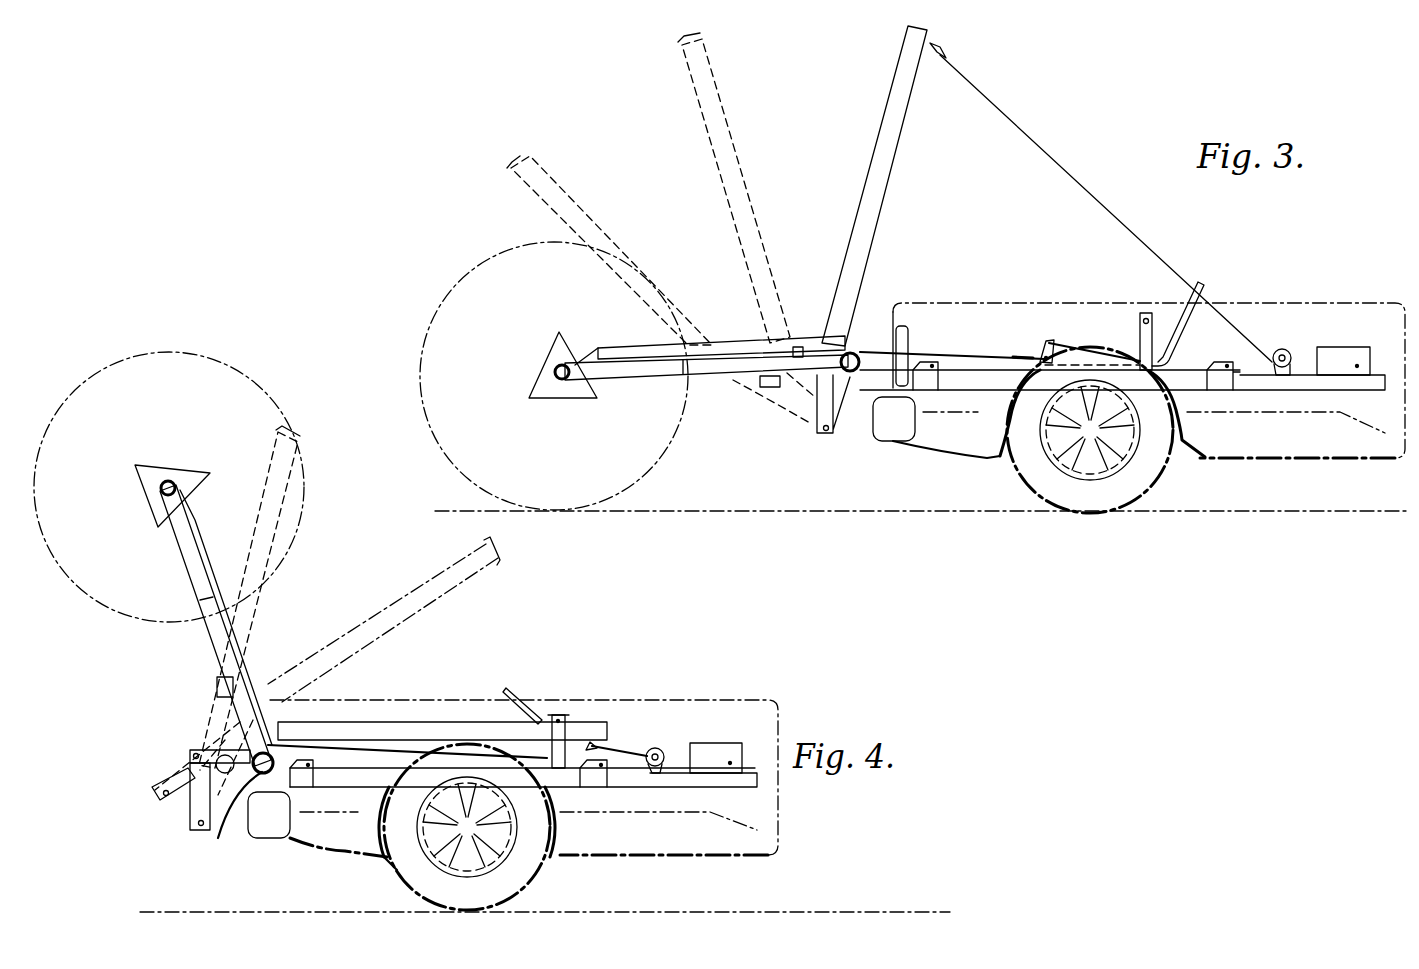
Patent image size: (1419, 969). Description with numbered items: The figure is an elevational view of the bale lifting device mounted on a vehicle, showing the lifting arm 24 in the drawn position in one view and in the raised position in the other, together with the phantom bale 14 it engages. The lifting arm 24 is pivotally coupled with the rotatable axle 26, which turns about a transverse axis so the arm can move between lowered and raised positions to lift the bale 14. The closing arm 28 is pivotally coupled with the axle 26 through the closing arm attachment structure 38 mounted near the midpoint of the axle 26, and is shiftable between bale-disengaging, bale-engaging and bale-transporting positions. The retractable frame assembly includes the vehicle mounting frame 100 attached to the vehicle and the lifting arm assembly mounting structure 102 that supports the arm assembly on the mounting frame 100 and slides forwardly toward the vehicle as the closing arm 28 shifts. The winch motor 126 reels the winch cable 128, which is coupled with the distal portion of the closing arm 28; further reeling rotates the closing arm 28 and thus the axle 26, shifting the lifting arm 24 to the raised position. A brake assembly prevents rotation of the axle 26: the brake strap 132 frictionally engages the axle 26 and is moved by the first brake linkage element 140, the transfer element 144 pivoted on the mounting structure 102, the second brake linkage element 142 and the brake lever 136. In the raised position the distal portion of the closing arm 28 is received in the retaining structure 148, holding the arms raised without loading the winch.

In FIG. 3, the bale 14 is at (487, 334).
In FIG. 4, the bale 14 is at (210, 410).
In FIG. 3, the lifting arm 24 is at (713, 375).
In FIG. 4, the lifting arm 24 is at (217, 623).
In FIG. 3, the rotatable axle 26 is at (880, 392).
In FIG. 4, the rotatable axle 26 is at (240, 790).
In FIG. 3, the closing arm 28 is at (878, 165).
In FIG. 4, the closing arm 28 is at (458, 722).
In FIG. 3, the closing arm attachment structure 38 is at (842, 420).
In FIG. 3, the vehicle mounting frame 100 is at (1297, 390).
In FIG. 4, the vehicle mounting frame 100 is at (678, 782).
In FIG. 3, the lifting arm assembly mounting structure 102 is at (985, 380).
In FIG. 4, the lifting arm assembly mounting structure 102 is at (345, 777).
In FIG. 3, the winch motor 126 is at (1345, 347).
In FIG. 4, the winch motor 126 is at (720, 750).
In FIG. 3, the winch cable 128 is at (1038, 142).
In FIG. 4, the winch cable 128 is at (640, 750).
In FIG. 3, the brake strap 132 is at (866, 335).
In FIG. 3, the brake lever 136 is at (1186, 336).
In FIG. 3, the first brake linkage element 140 is at (945, 350).
In FIG. 3, the second brake linkage element 142 is at (1050, 340).
In FIG. 3, the transfer element 144 is at (1040, 350).
In FIG. 3, the retaining structure 148 is at (1150, 330).
In FIG. 4, the retaining structure 148 is at (560, 735).